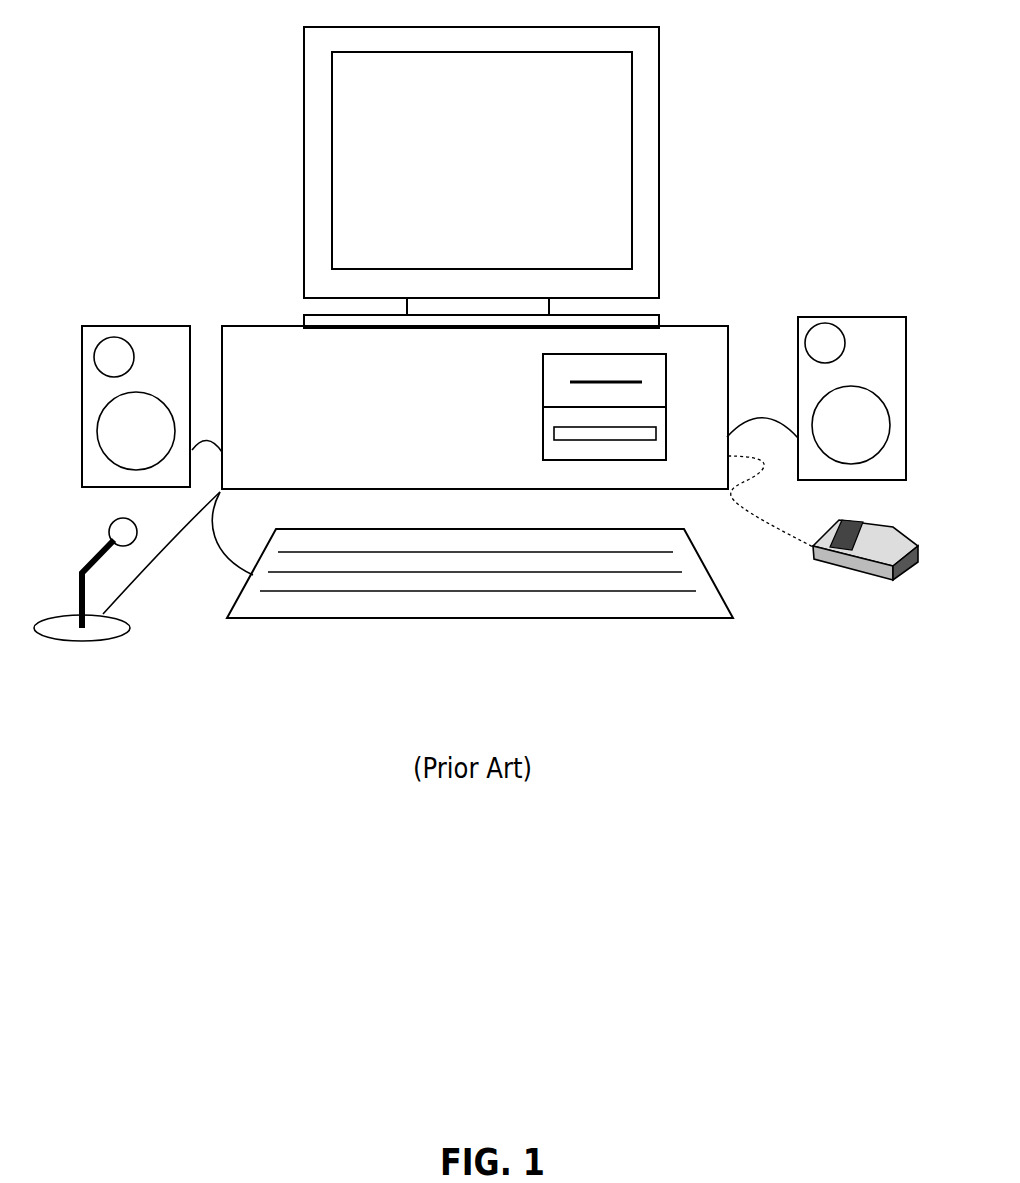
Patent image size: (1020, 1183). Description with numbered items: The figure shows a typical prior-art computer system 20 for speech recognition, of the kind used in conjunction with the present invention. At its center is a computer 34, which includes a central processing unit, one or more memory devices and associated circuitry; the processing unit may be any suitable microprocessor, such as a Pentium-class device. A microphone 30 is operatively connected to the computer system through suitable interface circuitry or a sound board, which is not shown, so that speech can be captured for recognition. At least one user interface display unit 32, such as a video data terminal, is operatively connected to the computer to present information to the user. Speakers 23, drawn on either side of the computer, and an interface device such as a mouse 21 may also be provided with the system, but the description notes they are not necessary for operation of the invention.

The computer system 20 is at (476, 362).
The mouse 21 is at (860, 585).
The speakers 23 is at (163, 326).
The microphone 30 is at (84, 641).
The user interface display unit 32 is at (660, 96).
The computer 34 is at (247, 326).